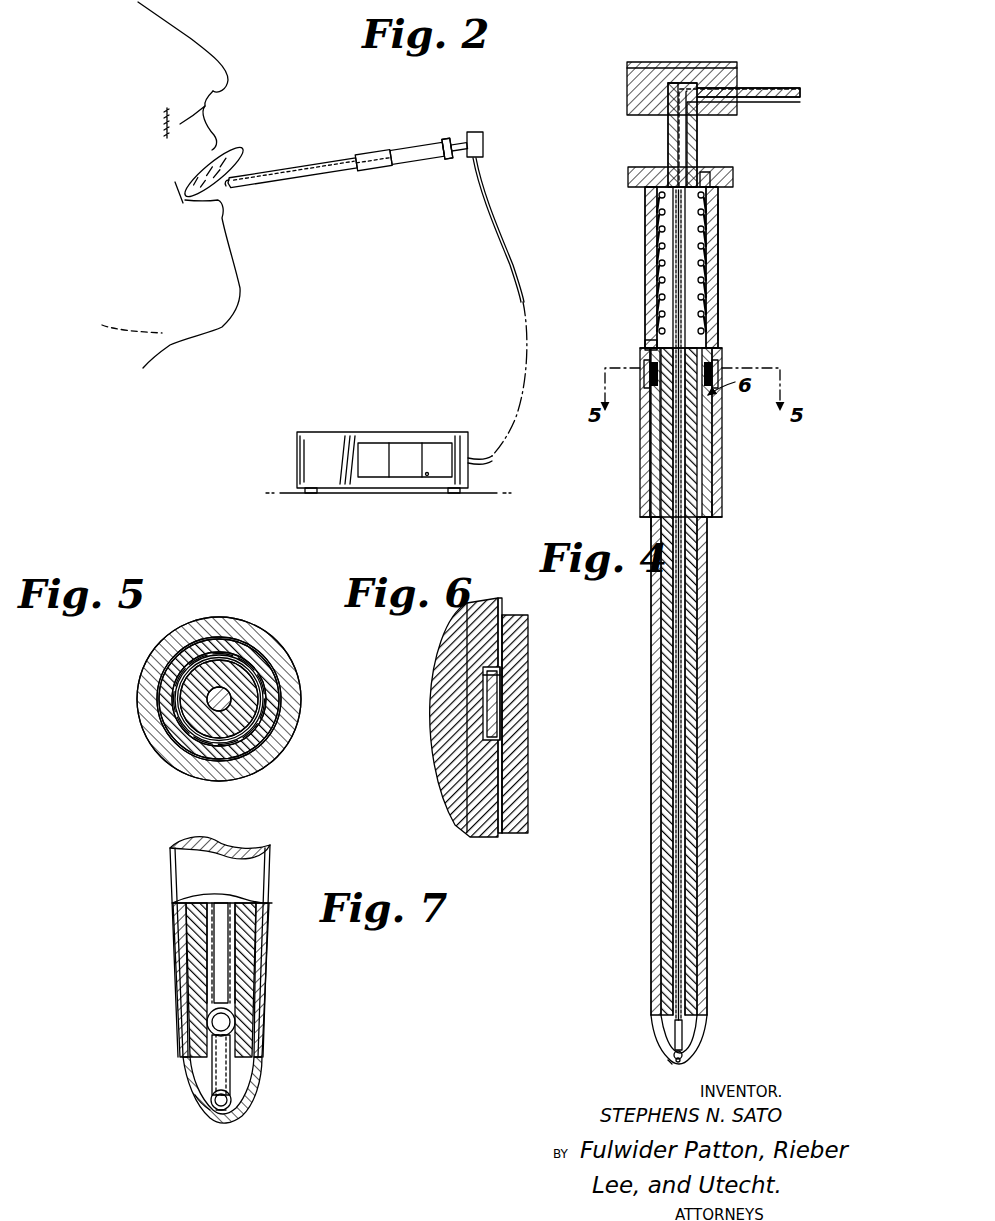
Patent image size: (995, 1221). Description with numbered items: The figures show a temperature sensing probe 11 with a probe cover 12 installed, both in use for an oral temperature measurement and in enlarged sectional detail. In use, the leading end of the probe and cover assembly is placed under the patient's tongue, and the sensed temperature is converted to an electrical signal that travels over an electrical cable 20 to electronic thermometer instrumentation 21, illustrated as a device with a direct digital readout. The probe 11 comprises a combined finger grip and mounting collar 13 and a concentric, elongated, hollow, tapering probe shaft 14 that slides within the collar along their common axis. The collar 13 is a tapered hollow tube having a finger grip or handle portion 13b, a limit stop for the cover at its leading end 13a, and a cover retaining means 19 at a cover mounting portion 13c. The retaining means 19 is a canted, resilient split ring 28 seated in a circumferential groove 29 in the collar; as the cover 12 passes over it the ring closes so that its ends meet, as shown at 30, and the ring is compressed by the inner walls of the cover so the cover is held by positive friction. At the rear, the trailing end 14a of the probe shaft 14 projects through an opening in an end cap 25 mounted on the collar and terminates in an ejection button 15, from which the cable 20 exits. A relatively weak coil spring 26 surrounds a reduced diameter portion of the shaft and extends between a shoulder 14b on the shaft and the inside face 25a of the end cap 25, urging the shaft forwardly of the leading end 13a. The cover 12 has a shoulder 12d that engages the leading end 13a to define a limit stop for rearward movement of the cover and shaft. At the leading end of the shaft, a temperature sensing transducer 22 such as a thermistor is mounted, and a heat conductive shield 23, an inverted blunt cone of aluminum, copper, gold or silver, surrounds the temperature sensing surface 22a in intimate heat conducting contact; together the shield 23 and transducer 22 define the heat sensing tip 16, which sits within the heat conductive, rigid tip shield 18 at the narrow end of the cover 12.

In FIG. 2, the temperature sensing probe 11 is at (425, 126).
In FIG. 4, the temperature sensing probe 11 is at (720, 287).
In FIG. 2, the probe cover 12 is at (294, 155).
In FIG. 4, the probe cover 12 is at (708, 832).
In FIG. 5, the probe cover 12 is at (289, 660).
In FIG. 6, the probe cover 12 is at (528, 725).
In FIG. 7, the probe cover 12 is at (268, 972).
In FIG. 4, the shoulder 12d is at (652, 522).
In FIG. 2, the combined finger grip and mounting collar 13 is at (399, 173).
In FIG. 4, the combined finger grip and mounting collar 13 is at (712, 320).
In FIG. 5, the combined finger grip and mounting collar 13 is at (242, 660).
In FIG. 6, the combined finger grip and mounting collar 13 is at (490, 643).
In FIG. 4, the leading end of the collar 13a is at (712, 512).
In FIG. 4, the finger grip or handle portion 13b is at (718, 232).
In FIG. 4, the cover mounting portion 13c is at (722, 422).
In FIG. 4, the probe shaft 14 is at (690, 656).
In FIG. 5, the probe shaft 14 is at (245, 728).
In FIG. 6, the probe shaft 14 is at (442, 750).
In FIG. 7, the probe shaft 14 is at (246, 997).
In FIG. 2, the trailing end of the probe shaft 14a is at (483, 117).
In FIG. 4, the trailing end of the probe shaft 14a is at (700, 162).
In FIG. 4, the shoulder 14b is at (655, 350).
In FIG. 2, the ejection button 15 is at (484, 142).
In FIG. 4, the ejection button 15 is at (737, 76).
In FIG. 4, the heat sensing tip 16 is at (670, 1063).
In FIG. 7, the heat sensing tip 16 is at (196, 1098).
In FIG. 2, the tip shield 18 is at (229, 190).
In FIG. 4, the tip shield 18 is at (694, 1052).
In FIG. 7, the tip shield 18 is at (246, 1098).
In FIG. 4, the cover retaining means 19 is at (636, 385).
In FIG. 5, the cover retaining means 19 is at (272, 710).
In FIG. 6, the cover retaining means 19 is at (500, 738).
In FIG. 2, the electrical cable 20 is at (500, 200).
In FIG. 4, the electrical cable 20 is at (780, 90).
In FIG. 5, the electrical cable 20 is at (170, 748).
In FIG. 7, the electrical cable 20 is at (213, 938).
In FIG. 2, the electronic thermometer instrumentation 21 is at (375, 430).
In FIG. 4, the temperature sensing transducer 22 is at (666, 1050).
In FIG. 7, the temperature sensing transducer 22 is at (215, 1068).
In FIG. 4, the temperature sensing surface 22a is at (688, 1058).
In FIG. 7, the temperature sensing surface 22a is at (218, 1112).
In FIG. 4, the heat conductive shield 23 is at (677, 1064).
In FIG. 7, the heat conductive shield 23 is at (224, 1114).
In FIG. 4, the end cap 25 is at (733, 178).
In FIG. 4, the inside face of the end cap 25a is at (720, 167).
In FIG. 4, the coil spring 26 is at (660, 259).
In FIG. 4, the split ring 28 is at (722, 372).
In FIG. 5, the split ring 28 is at (286, 668).
In FIG. 6, the split ring 28 is at (495, 700).
In FIG. 5, the circumferential groove 29 is at (232, 660).
In FIG. 6, the circumferential groove 29 is at (505, 672).
In FIG. 5, the meeting ends of the split ring 30 is at (275, 684).